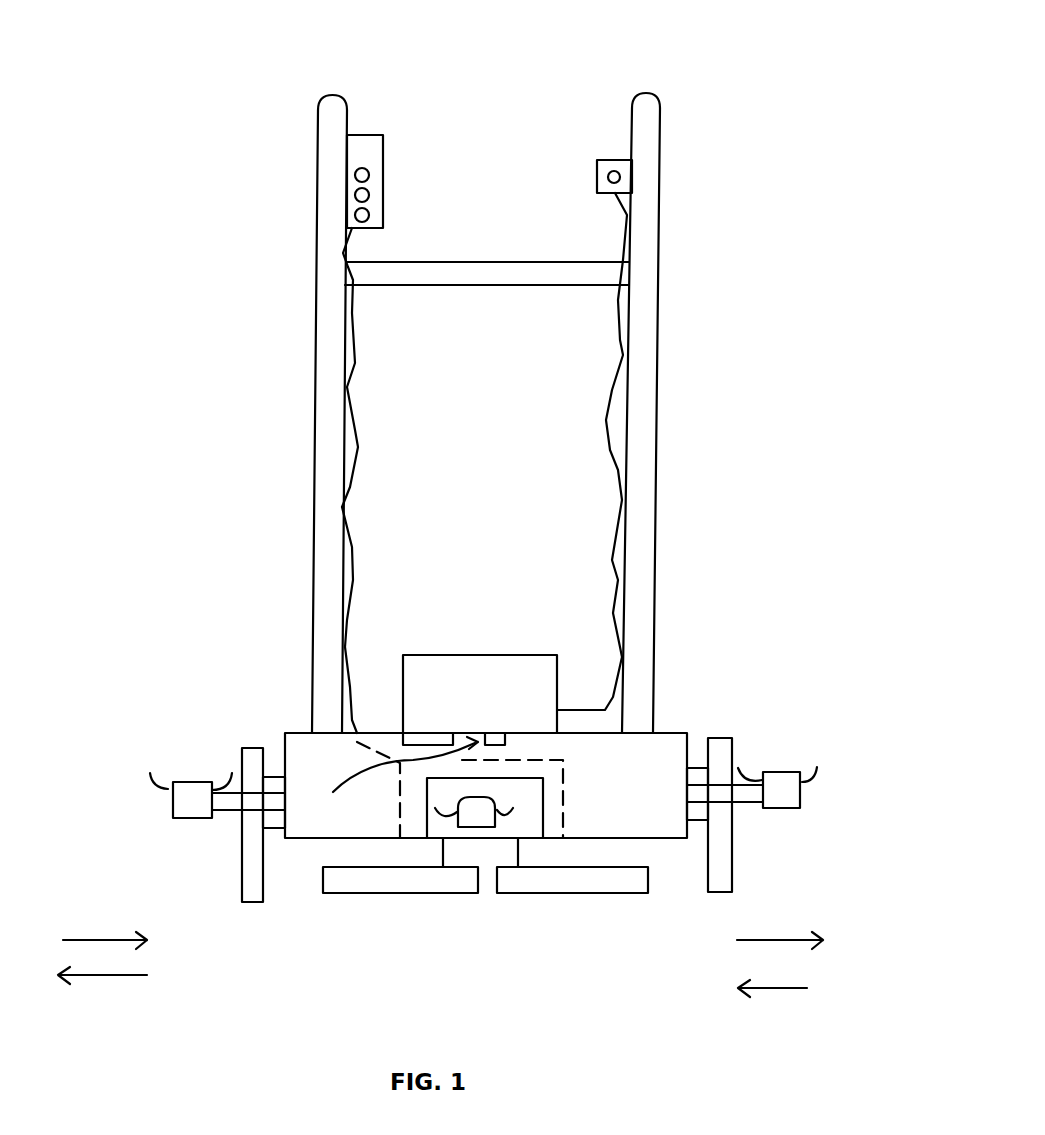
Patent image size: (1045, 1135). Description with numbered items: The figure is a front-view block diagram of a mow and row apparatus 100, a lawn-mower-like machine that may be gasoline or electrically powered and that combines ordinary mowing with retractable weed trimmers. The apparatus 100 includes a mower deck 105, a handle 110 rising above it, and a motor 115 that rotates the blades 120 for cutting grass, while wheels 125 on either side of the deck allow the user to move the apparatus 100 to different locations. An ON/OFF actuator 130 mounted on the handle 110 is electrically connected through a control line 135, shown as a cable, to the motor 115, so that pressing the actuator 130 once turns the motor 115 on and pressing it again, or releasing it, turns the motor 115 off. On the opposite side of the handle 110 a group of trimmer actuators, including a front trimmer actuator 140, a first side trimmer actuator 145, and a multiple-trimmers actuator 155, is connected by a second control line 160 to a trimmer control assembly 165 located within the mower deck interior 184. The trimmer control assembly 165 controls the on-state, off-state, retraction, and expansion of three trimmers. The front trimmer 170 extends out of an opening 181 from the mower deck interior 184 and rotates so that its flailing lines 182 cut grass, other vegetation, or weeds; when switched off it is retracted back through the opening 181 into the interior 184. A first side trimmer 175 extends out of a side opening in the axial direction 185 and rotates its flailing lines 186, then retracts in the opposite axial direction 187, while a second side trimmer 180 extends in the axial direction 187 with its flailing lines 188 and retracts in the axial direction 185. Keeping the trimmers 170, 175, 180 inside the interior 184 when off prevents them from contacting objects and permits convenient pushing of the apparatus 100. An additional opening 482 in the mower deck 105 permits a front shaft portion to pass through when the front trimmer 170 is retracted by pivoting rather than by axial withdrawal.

The mow and row apparatus 100 is at (256, 98).
The mower deck 105 is at (520, 788).
The handle 110 is at (655, 440).
The motor 115 is at (475, 655).
The blades 120 is at (380, 885).
The wheels 125 is at (257, 748).
The ON/OFF actuator 130 is at (608, 177).
The control line 135 is at (608, 398).
The front trimmer actuator 140 is at (362, 148).
The first side trimmer actuator 145 is at (367, 173).
The multiple-trimmers actuator 155 is at (368, 213).
The control line 160 is at (368, 195).
The trimmer control assembly 165 is at (583, 789).
The trimmer 170 is at (467, 807).
The trimmer 175 is at (778, 808).
The trimmer 180 is at (192, 818).
The opening 181 is at (543, 813).
The flailing lines 182 is at (443, 815).
The mower deck interior 184 is at (677, 733).
The axial direction 185 is at (92, 940).
The flailing lines 186 is at (750, 780).
The axial direction 187 is at (93, 975).
The flailing lines 188 is at (168, 790).
The opening 482 is at (395, 778).